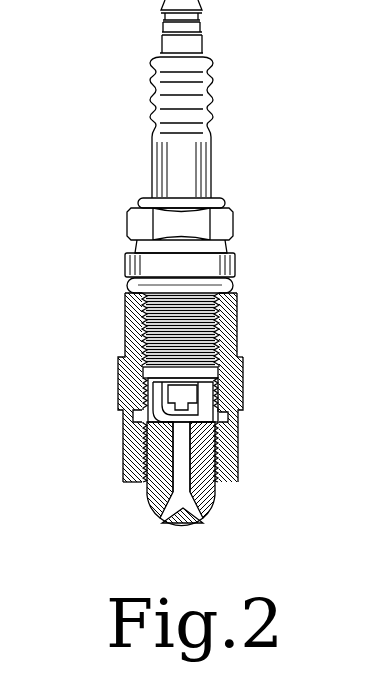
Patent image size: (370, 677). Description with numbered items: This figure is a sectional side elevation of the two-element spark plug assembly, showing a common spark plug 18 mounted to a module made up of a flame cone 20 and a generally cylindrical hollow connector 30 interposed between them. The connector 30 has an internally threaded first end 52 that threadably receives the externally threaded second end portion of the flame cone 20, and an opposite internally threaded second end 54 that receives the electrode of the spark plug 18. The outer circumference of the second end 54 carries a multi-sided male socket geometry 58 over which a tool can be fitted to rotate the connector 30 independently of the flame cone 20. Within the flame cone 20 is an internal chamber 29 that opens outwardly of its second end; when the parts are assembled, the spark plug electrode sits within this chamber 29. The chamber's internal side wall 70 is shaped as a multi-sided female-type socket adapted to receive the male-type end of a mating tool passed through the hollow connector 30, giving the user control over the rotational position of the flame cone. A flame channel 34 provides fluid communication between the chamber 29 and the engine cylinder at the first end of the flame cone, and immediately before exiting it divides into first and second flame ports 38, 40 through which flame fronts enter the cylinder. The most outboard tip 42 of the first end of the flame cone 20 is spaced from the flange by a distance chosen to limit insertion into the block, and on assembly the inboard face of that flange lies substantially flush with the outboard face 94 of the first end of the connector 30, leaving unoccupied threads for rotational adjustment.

The spark plug 18 is at (163, 93).
The flame cone 20 is at (143, 484).
The internal chamber 29 is at (130, 413).
The connector 30 is at (125, 337).
The flame channel 34 is at (183, 445).
The first flame port 38 is at (212, 522).
The second flame port 40 is at (160, 522).
The outboard tip 42 is at (181, 525).
The first end of the connector 52 is at (125, 325).
The second end of the connector 54 is at (217, 326).
The multi-sided male socket geometry 58 is at (238, 357).
The internal side wall 70 is at (123, 408).
The outboard face of the first end of the connector 94 is at (132, 482).